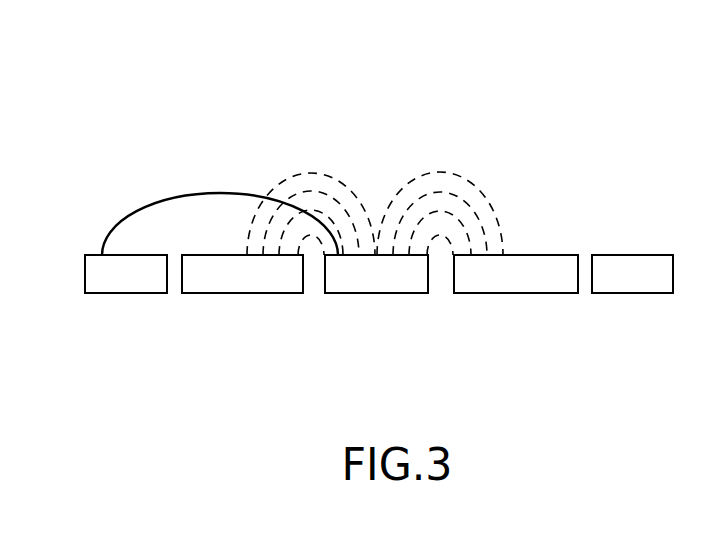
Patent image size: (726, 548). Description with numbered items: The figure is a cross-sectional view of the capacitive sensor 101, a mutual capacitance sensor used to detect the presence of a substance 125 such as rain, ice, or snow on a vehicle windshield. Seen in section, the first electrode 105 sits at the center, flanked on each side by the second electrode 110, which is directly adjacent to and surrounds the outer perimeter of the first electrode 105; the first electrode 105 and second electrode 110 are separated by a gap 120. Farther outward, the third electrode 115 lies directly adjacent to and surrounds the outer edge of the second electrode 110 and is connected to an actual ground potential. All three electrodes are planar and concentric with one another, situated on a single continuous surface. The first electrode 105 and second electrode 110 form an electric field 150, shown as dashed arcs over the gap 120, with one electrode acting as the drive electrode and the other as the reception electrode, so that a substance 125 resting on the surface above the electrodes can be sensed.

The capacitive sensor 101 is at (586, 108).
The first electrode 105 is at (372, 276).
The second electrode 110 is at (233, 276).
The third electrode 115 is at (138, 276).
The gap 120 is at (314, 302).
The substance 125 is at (178, 193).
The electric field 150 is at (298, 175).